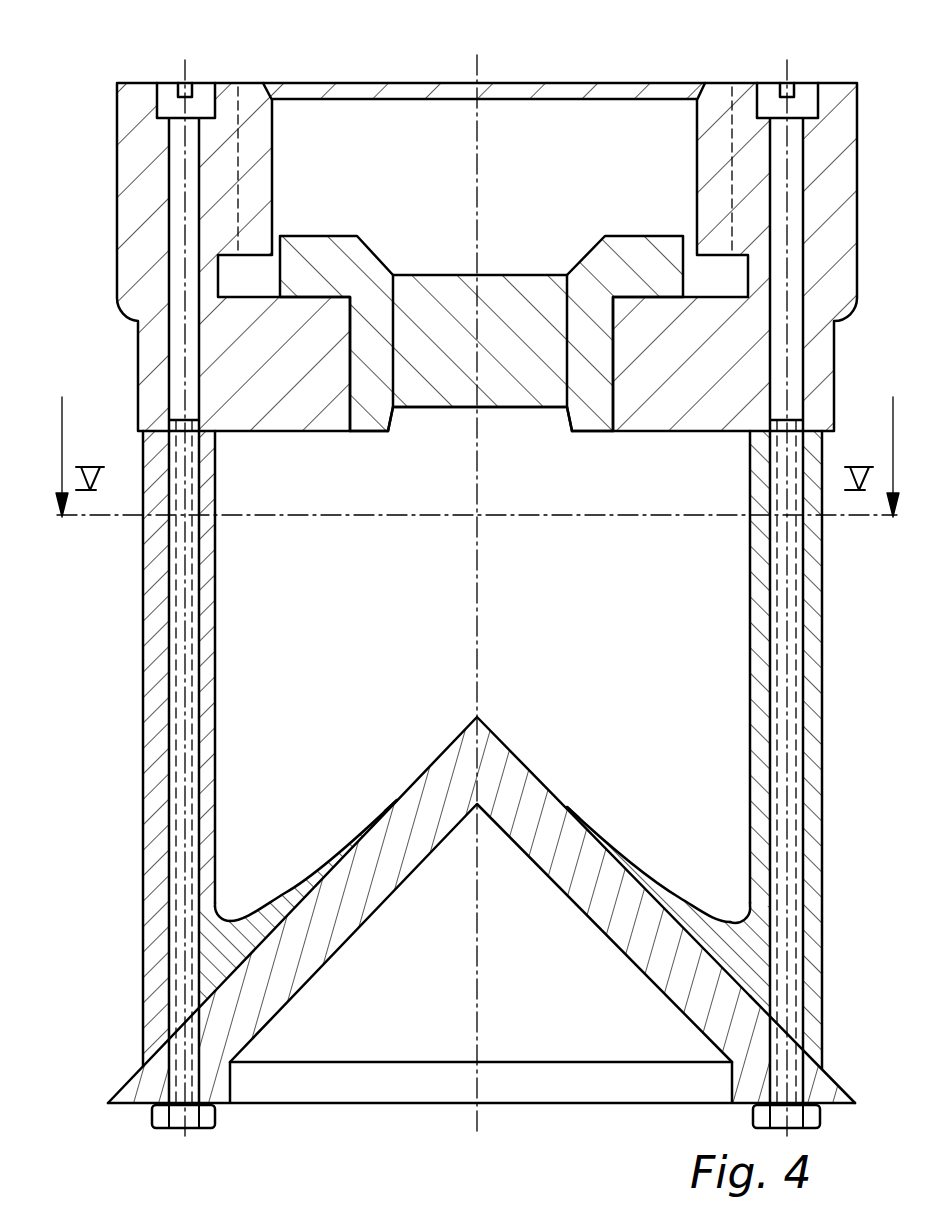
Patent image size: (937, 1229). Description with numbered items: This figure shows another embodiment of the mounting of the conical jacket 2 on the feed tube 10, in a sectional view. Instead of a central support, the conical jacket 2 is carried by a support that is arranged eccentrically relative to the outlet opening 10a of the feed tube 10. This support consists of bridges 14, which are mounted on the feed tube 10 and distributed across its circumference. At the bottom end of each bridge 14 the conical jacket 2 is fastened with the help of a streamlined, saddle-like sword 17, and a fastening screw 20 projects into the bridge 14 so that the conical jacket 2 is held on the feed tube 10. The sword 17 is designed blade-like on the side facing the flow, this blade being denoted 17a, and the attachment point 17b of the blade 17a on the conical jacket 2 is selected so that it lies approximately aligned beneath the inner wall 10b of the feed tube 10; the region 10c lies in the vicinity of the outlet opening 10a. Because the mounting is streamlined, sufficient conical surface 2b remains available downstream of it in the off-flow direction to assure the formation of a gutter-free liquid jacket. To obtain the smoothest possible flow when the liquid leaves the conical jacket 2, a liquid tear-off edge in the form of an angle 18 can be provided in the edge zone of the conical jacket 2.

The conical jacket 2 is at (513, 753).
The conical surface 2b is at (118, 1068).
The feed tube 10 is at (128, 233).
The outlet opening 10a is at (497, 357).
The inner wall 10b is at (395, 348).
The chamfer 10c is at (395, 410).
The bridge 14 is at (162, 667).
The streamlined saddle-like sword 17 is at (263, 925).
The blade 17a is at (248, 913).
The attachment point 17b is at (567, 805).
The angle 18 is at (110, 1097).
The fastening screw 20 is at (200, 103).